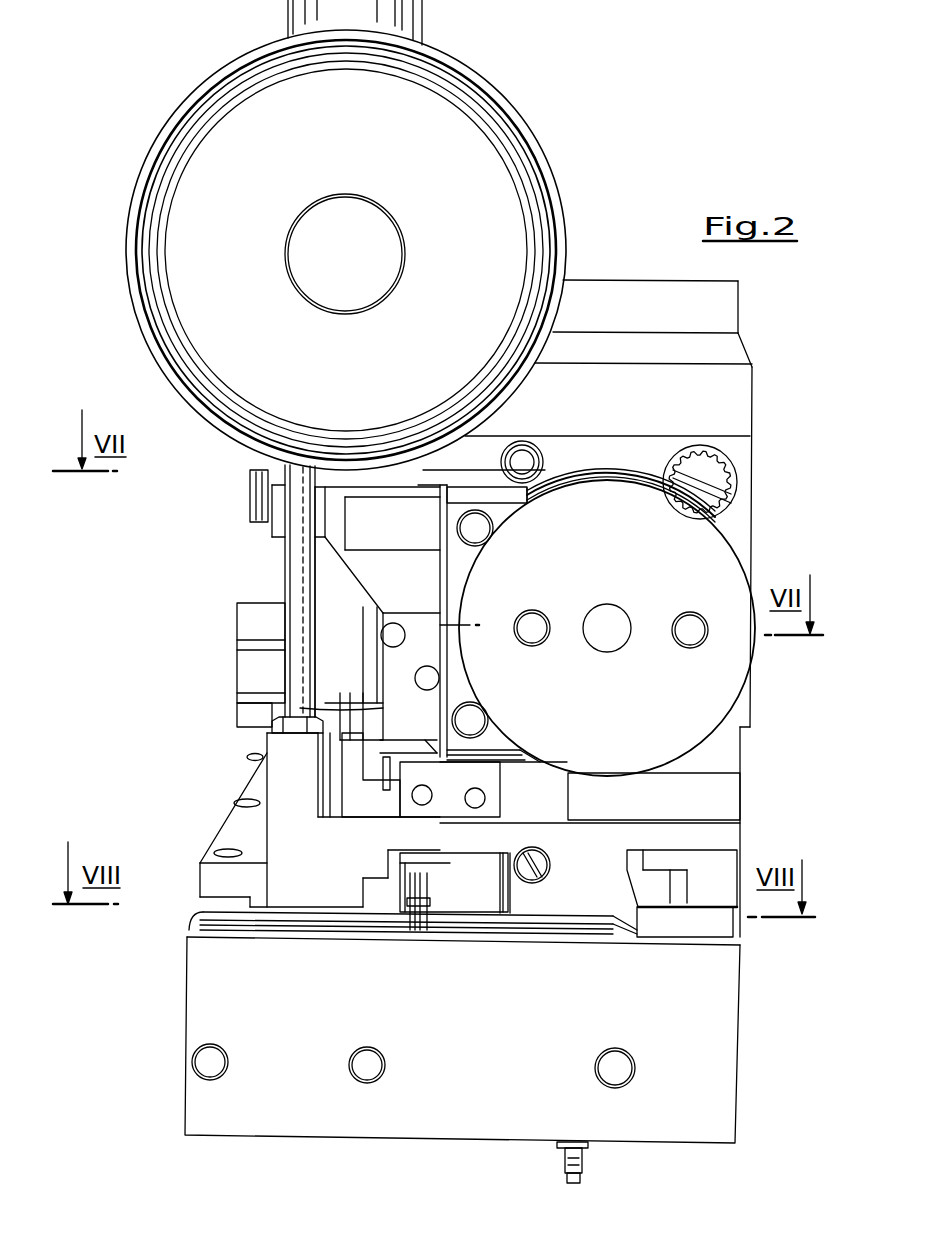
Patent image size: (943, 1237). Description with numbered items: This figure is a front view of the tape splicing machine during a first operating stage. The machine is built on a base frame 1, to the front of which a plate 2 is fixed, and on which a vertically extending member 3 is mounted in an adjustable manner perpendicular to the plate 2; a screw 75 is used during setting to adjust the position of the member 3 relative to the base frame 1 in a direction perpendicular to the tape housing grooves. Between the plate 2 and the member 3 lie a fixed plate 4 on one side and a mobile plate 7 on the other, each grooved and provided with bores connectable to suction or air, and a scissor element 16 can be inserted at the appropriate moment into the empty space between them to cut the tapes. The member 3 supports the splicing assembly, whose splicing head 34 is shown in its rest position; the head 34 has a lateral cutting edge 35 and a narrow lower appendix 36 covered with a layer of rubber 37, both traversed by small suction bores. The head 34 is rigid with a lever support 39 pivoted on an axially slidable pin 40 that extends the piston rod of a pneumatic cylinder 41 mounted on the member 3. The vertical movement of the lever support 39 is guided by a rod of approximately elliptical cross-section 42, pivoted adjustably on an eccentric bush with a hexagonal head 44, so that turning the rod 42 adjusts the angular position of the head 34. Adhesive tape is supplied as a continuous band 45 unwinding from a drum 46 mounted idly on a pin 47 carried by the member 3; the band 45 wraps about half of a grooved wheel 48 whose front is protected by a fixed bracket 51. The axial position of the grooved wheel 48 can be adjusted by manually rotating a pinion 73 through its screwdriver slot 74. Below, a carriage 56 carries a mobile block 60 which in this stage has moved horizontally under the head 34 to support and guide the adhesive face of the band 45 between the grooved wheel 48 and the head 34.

The base frame 1 is at (217, 878).
The plate 2 is at (712, 1037).
The vertically extending member 3 is at (738, 400).
The fixed plate 4 is at (553, 910).
The mobile plate 7 is at (285, 914).
The scissor element 16 is at (432, 901).
The splicing head 34 is at (452, 686).
The lateral cutting edge 35 is at (430, 740).
The lower appendix 36 is at (390, 743).
The layer of rubber 37 is at (450, 789).
The lever support 39 is at (425, 535).
The axially slidable pin 40 is at (327, 565).
The pneumatic cylinder 41 is at (407, 12).
The rod of approximately elliptical cross-section 42 is at (297, 590).
The hexagonal head 44 is at (297, 727).
The band of adhesive tape 45 is at (537, 180).
The drum 46 is at (464, 140).
The pin 47 is at (375, 227).
The grooved wheel 48 is at (550, 470).
The fixed bracket 51 is at (707, 567).
The carriage 56 is at (358, 803).
The mobile block 60 is at (412, 825).
The pinion 73 is at (742, 478).
The screwdriver slot 74 is at (742, 490).
The screw 75 is at (547, 853).